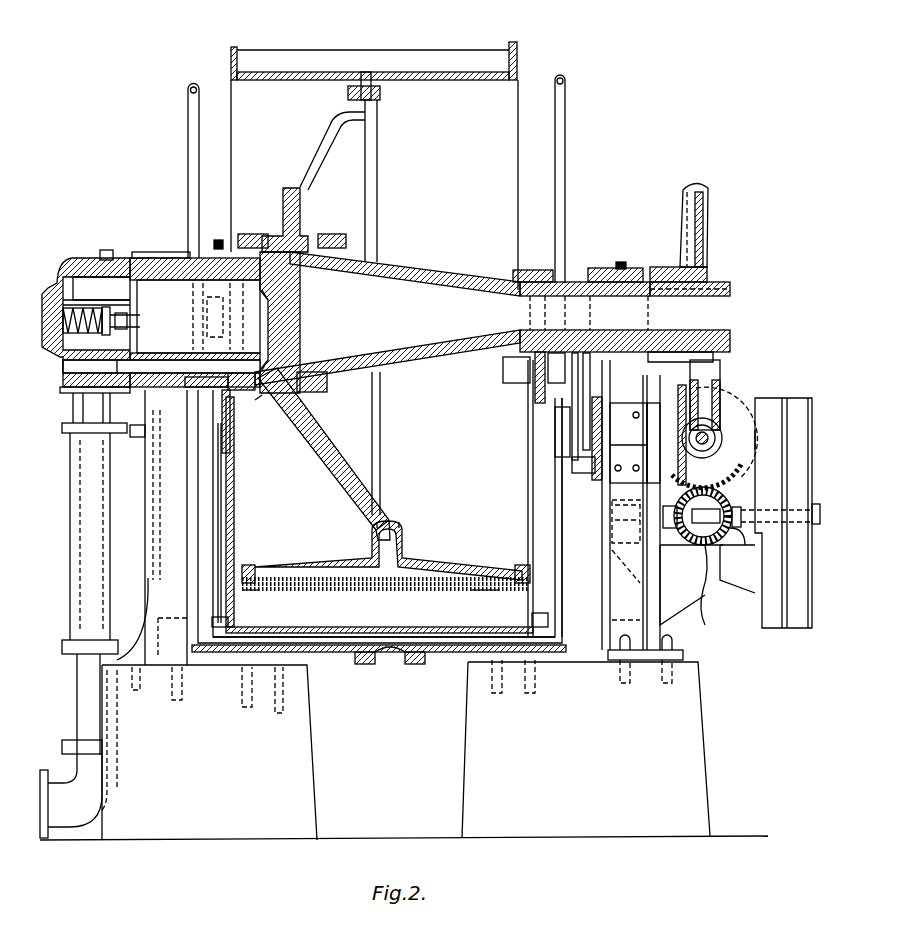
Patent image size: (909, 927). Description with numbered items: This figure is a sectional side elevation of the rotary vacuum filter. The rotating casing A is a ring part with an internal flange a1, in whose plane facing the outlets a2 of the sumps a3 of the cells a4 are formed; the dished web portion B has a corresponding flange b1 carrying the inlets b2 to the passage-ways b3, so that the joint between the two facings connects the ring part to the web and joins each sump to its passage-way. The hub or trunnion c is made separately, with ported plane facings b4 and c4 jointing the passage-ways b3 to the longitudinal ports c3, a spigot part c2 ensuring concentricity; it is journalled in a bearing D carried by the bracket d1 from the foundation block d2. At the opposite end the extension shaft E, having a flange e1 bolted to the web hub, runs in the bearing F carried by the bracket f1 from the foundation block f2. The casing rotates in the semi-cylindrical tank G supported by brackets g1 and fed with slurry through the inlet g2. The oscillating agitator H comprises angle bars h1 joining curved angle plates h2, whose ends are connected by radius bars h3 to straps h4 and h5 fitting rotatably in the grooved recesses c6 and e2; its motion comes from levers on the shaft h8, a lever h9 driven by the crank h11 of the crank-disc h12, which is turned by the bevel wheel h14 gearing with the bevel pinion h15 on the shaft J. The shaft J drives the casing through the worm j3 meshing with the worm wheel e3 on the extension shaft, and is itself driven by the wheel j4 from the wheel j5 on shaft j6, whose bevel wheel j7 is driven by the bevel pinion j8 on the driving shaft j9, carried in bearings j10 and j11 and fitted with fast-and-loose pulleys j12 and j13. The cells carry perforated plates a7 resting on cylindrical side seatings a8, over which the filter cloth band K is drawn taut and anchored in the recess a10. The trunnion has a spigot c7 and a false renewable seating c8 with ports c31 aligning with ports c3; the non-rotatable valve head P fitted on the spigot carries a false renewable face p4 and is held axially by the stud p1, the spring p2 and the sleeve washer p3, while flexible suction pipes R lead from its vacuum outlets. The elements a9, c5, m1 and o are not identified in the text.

The rotating casing A is at (502, 85).
The internal flange a1 is at (379, 108).
The outlets a2 is at (390, 526).
The sumps a3 is at (384, 553).
The cells a4 is at (388, 576).
The perforated circumferential plate a7 is at (467, 583).
The cylindrical side seatings a8 is at (252, 577).
The plate end a9 is at (254, 588).
The anchorage recess a10 is at (460, 62).
The dished web portion B is at (328, 137).
The flange b1 is at (357, 84).
The inlet b2 is at (367, 527).
The passage-ways b3 is at (320, 440).
The ported plane facing b4 is at (255, 408).
The hub or trunnion c is at (197, 272).
The spigot part c2 is at (257, 289).
The longitudinal ports c3 is at (164, 392).
The ports c31 is at (92, 385).
The ported plane facing c4 is at (245, 235).
The flange column c5 is at (291, 230).
The grooved recess c6 is at (216, 245).
The spigot c7 is at (136, 345).
The false renewable seating c8 is at (198, 316).
The bearing D is at (168, 250).
The bracket d1 is at (162, 560).
The foundation block d2 is at (300, 747).
The extension shaft E is at (410, 262).
The flange e1 is at (312, 242).
The grooved recess e2 is at (538, 270).
The worm wheel e3 is at (692, 186).
The bearing F is at (621, 264).
The bracket f1 is at (617, 578).
The foundation block f2 is at (697, 710).
The semi-cylindrical tank G is at (208, 513).
The brackets g1 is at (247, 653).
The inlet g2 is at (567, 440).
The oscillating agitator H is at (328, 630).
The angle bars h1 is at (437, 637).
The curved angle plates h2 is at (225, 623).
The radius bars h3 is at (234, 500).
The strap h4 is at (216, 248).
The strap h5 is at (530, 272).
The shaft h8 is at (517, 370).
The lever h9 is at (588, 453).
The crank h11 is at (580, 475).
The crank-disc h12 is at (593, 410).
The bevel wheel h14 is at (673, 467).
The bevel pinion h15 is at (677, 433).
The shaft J is at (712, 424).
The worm j3 is at (706, 412).
The wheel j4 is at (745, 432).
The wheel j5 is at (727, 490).
The shaft j6 is at (715, 442).
The bevel wheel j7 is at (703, 542).
The bevel pinion j8 is at (670, 548).
The driving shaft j9 is at (743, 510).
The bearing j10 is at (716, 574).
The bearing j11 is at (615, 510).
The fast-and-loose pulley j12 is at (766, 400).
The fast-and-loose pulley j13 is at (802, 400).
The band of filter cloth K is at (335, 588).
The rod m1 is at (188, 114).
The lining o is at (563, 558).
The non-rotatable valve head P is at (107, 256).
The stud p1 is at (140, 320).
The spring p2 is at (90, 268).
The sleeve washer p3 is at (102, 300).
The false renewable face p4 is at (63, 366).
The flexible suction pipes R is at (93, 525).